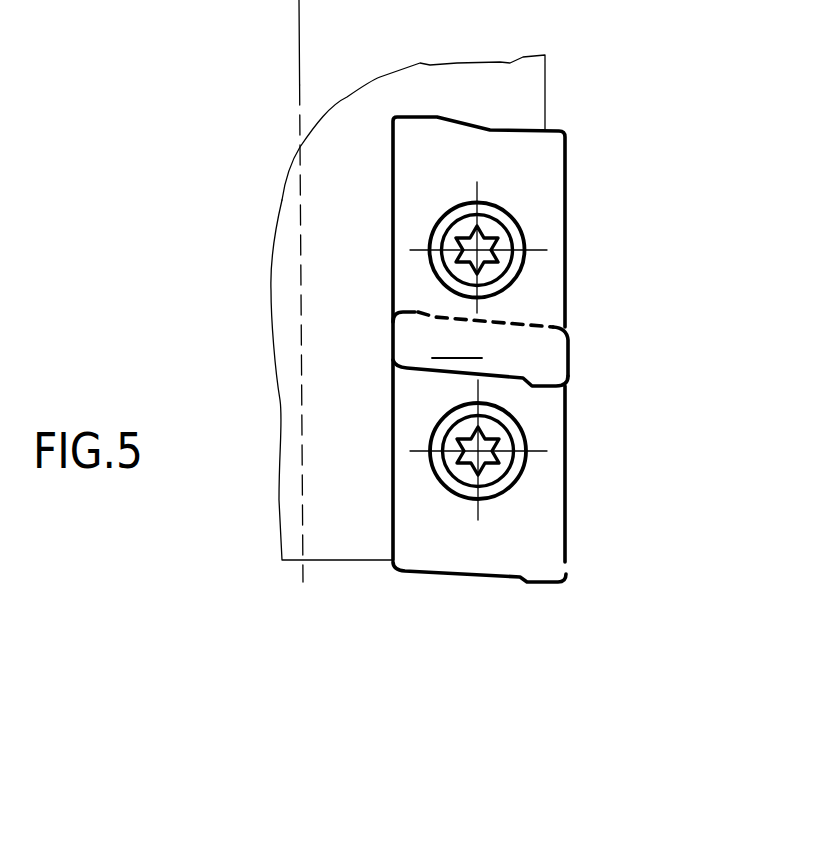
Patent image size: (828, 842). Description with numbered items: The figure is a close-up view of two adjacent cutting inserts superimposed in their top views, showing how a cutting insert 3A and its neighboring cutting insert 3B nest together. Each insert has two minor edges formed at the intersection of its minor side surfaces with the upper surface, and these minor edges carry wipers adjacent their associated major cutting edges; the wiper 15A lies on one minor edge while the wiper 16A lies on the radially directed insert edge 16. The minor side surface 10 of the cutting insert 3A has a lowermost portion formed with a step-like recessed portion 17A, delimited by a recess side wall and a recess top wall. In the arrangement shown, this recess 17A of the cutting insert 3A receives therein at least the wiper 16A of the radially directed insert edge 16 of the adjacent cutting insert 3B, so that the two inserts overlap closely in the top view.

The minor side surface 10 is at (608, 345).
The cutting insert 3A is at (545, 192).
The cutting insert 3B is at (545, 492).
The wiper 15A is at (545, 386).
The minor edge 16 is at (537, 327).
The wiper 16A is at (423, 117).
The recessed portion 17A is at (480, 344).